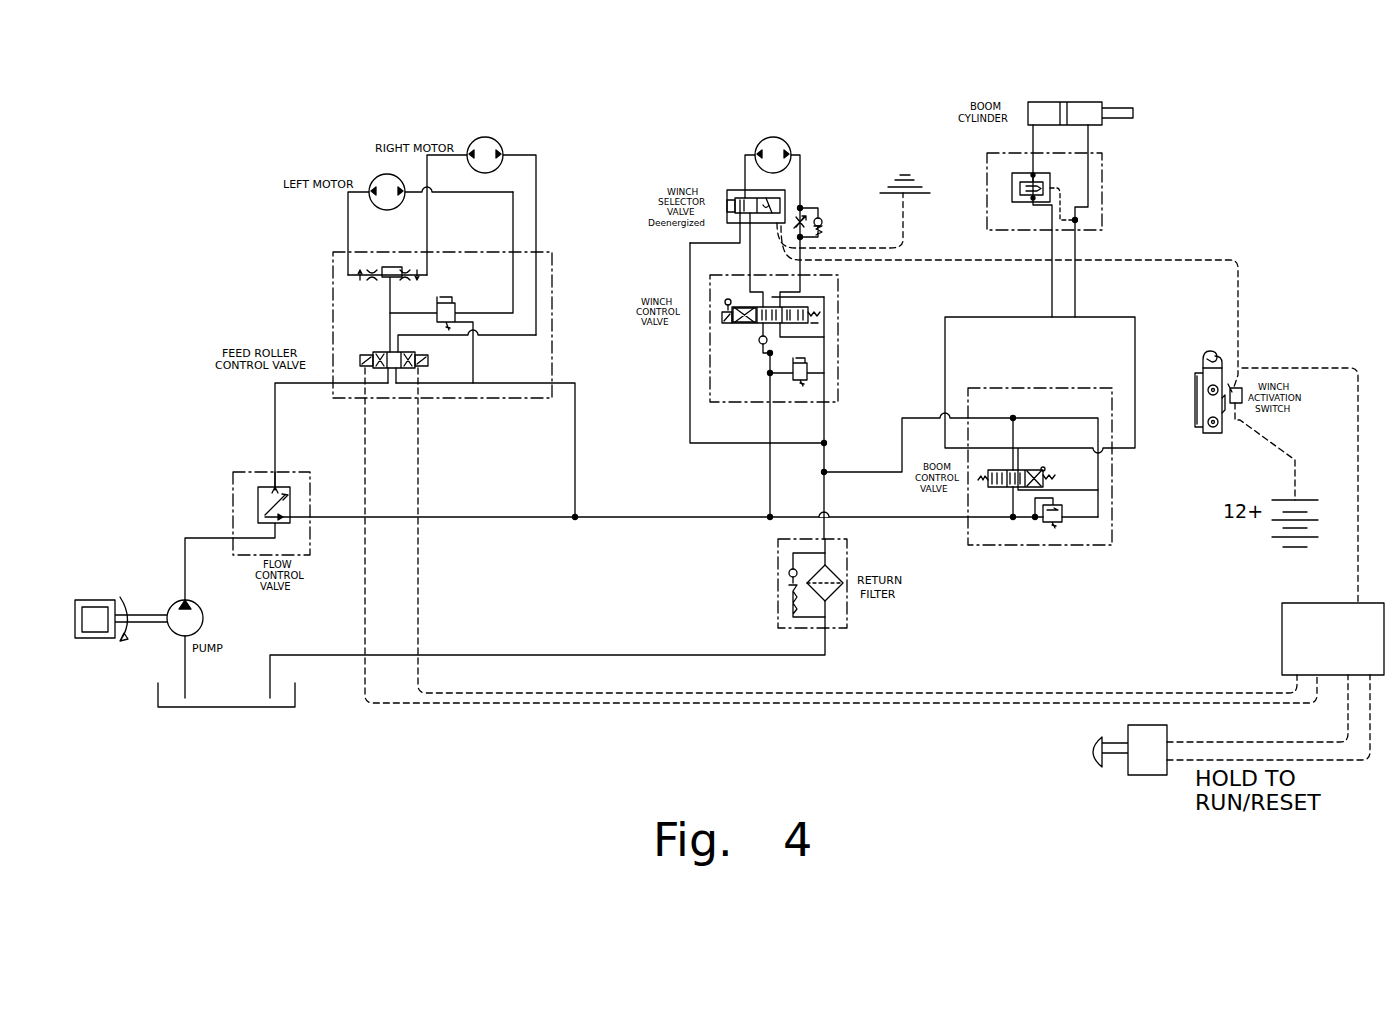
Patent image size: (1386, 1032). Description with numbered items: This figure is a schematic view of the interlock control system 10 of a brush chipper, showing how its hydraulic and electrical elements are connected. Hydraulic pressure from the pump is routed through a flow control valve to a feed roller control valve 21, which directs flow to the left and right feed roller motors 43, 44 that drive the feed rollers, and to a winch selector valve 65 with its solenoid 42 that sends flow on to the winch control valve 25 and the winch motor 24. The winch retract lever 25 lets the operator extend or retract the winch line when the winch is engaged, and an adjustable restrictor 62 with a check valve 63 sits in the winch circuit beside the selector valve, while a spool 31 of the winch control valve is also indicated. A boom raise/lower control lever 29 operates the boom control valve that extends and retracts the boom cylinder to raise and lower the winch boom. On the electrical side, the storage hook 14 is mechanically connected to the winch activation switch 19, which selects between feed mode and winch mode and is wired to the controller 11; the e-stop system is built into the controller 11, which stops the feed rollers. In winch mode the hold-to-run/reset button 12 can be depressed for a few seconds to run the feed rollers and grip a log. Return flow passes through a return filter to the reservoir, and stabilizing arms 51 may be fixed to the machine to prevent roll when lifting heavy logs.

The interlock control system 10 is at (222, 158).
The left feed roller motor 43 is at (380, 173).
The right feed roller motor 44 is at (487, 143).
The feed roller control valve 21 is at (382, 353).
The winch motor 24 is at (780, 143).
The winch selector valve 65 is at (775, 203).
The winch selector valve solenoid 42 is at (737, 207).
The adjustable flow restrictor 62 is at (802, 217).
The check valve 63 is at (825, 220).
The winch retract lever 25 is at (727, 300).
The winch control valve spool 31 is at (752, 325).
The boom raise/lower control lever 29 is at (1045, 469).
The storage hook 14 is at (1213, 372).
The winch activation switch 19 is at (1242, 387).
The controller 11 is at (1290, 648).
The hold-to-run/reset button 12 is at (1147, 768).
The stabilizing arms 51 is at (290, 693).